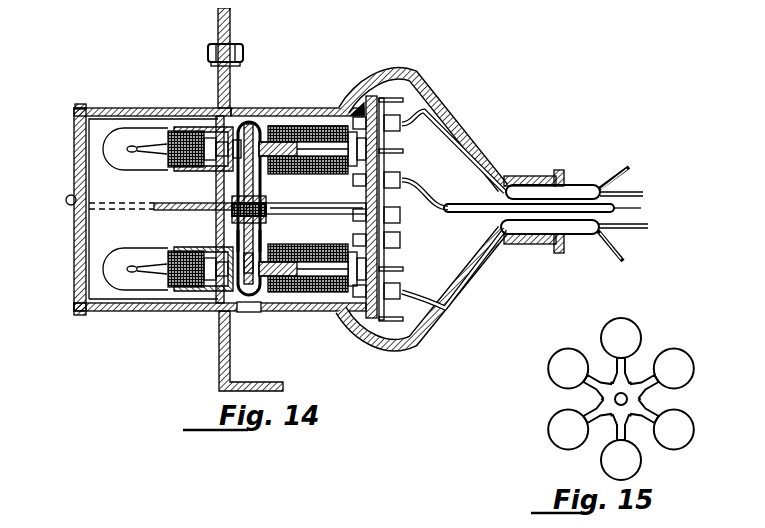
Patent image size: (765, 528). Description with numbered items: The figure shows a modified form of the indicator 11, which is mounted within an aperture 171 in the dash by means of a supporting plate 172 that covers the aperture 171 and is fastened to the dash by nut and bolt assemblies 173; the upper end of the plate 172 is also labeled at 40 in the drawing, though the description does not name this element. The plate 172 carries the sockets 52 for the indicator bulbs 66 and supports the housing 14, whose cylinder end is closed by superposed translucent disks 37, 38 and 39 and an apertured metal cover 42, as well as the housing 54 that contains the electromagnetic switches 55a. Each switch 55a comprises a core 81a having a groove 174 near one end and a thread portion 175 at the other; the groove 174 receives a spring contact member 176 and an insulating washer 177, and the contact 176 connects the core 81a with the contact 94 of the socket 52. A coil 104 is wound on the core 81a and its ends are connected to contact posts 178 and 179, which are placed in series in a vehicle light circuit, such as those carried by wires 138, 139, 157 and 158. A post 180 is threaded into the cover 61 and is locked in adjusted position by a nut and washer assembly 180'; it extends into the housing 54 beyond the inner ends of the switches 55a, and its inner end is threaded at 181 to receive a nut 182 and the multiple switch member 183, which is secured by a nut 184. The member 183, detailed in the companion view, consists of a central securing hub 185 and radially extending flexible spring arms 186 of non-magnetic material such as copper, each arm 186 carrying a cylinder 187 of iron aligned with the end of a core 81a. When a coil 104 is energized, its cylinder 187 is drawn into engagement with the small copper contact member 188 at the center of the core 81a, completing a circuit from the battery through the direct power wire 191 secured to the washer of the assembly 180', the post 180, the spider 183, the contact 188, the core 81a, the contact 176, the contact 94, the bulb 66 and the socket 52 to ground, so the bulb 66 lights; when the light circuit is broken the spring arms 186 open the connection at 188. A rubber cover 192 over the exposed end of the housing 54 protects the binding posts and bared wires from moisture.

In FIG. 14, the indicator 11 is at (143, 303).
In FIG. 14, the housing 14 is at (119, 99).
In FIG. 14, the translucent disk 37 is at (92, 101).
In FIG. 14, the translucent disk 38 is at (73, 97).
In FIG. 14, the translucent disk 39 is at (68, 99).
In FIG. 14, the support post 40 is at (223, 10).
In FIG. 14, the apertured metal cover 42 is at (66, 297).
In FIG. 14, the socket 52 is at (165, 164).
In FIG. 14, the housing 54 is at (293, 99).
In FIG. 14, the electromagnetic switch 55a is at (287, 167).
In FIG. 14, the cover 61 is at (365, 313).
In FIG. 14, the indicator bulb 66 is at (116, 162).
In FIG. 14, the core 81a is at (285, 295).
In FIG. 14, the contact 94 is at (239, 161).
In FIG. 14, the coil 104 is at (299, 109).
In FIG. 14, the wire 138 is at (634, 221).
In FIG. 14, the wire 139 is at (612, 254).
In FIG. 14, the wire 157 is at (623, 155).
In FIG. 14, the wire 158 is at (634, 186).
In FIG. 14, the aperture 171 is at (224, 100).
In FIG. 14, the supporting plate 172 is at (210, 71).
In FIG. 14, the nut and bolt assembly 173 is at (204, 44).
In FIG. 14, the groove 174 is at (256, 149).
In FIG. 14, the thread portion 175 is at (369, 156).
In FIG. 14, the spring contact member 176 is at (243, 114).
In FIG. 14, the insulating washer 177 is at (259, 111).
In FIG. 14, the contact post 178 is at (394, 119).
In FIG. 14, the contact post 179 is at (394, 171).
In FIG. 14, the post 180 is at (396, 217).
In FIG. 14, the nut and washer assembly 180' is at (401, 240).
In FIG. 14, the thread 181 is at (215, 196).
In FIG. 14, the nut 182 is at (259, 208).
In FIG. 14, the multiple switch member 183 is at (237, 231).
In FIG. 15, the multiple switch member 183 is at (684, 352).
In FIG. 14, the nut 184 is at (228, 214).
In FIG. 15, the hub 185 is at (631, 392).
In FIG. 15, the spring arm 186 is at (599, 365).
In FIG. 14, the cylinder 187 is at (241, 305).
In FIG. 15, the cylinder 187 is at (685, 426).
In FIG. 14, the contact member 188 is at (245, 232).
In FIG. 14, the direct power wire 191 is at (634, 203).
In FIG. 14, the rubber cover 192 is at (488, 143).